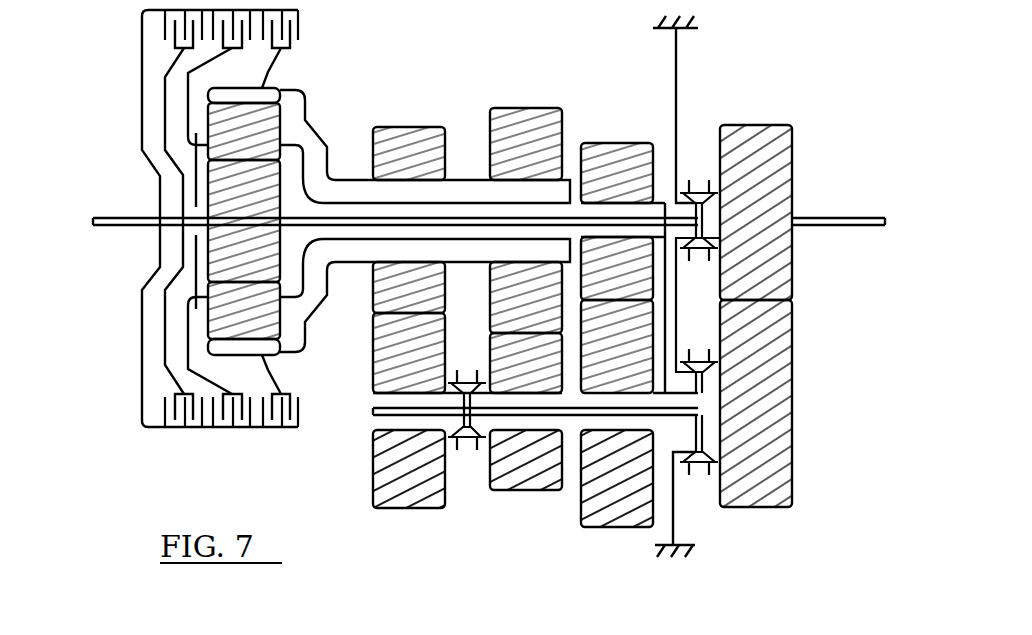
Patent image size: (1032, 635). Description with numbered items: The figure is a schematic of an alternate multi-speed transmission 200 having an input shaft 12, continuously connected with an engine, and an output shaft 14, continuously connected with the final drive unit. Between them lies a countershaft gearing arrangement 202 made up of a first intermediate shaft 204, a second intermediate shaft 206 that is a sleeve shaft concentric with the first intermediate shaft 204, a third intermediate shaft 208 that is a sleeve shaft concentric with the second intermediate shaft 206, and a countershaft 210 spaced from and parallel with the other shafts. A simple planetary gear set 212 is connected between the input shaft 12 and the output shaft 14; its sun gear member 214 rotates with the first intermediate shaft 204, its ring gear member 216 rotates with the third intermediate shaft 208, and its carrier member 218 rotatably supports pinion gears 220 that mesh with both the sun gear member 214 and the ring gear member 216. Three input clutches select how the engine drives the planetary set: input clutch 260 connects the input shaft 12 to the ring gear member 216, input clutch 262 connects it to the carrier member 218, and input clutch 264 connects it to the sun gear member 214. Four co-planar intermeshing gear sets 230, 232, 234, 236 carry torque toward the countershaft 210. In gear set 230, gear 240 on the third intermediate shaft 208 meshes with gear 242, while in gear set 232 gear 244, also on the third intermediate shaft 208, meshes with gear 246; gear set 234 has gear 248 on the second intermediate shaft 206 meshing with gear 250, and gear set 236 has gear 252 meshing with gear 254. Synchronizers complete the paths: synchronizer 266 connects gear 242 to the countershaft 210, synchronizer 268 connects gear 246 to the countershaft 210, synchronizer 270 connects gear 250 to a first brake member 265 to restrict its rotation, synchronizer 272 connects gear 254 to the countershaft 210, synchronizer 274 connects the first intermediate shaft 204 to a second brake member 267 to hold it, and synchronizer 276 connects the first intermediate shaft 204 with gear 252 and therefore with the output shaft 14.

The multi-speed transmission 200 is at (829, 57).
The input member 12 is at (111, 226).
The output member 14 is at (847, 226).
The countershaft gearing arrangement 202 is at (562, 510).
The first intermediate shaft 204 is at (361, 232).
The second intermediate shaft 206 is at (570, 200).
The third intermediate shaft 208 is at (476, 180).
The countershaft 210 is at (577, 414).
The planetary gear set 212 is at (425, 346).
The sun gear member 214 is at (264, 241).
The ring gear member 216 is at (265, 97).
The carrier member 218 is at (165, 153).
The pinion gears 220 is at (264, 144).
The gear set 230 is at (412, 514).
The gear set 232 is at (533, 499).
The gear set 234 is at (613, 538).
The gear set 236 is at (772, 356).
The gear 240 is at (427, 171).
The gear 242 is at (426, 374).
The gear 244 is at (542, 171).
The gear 246 is at (541, 374).
The gear 248 is at (634, 189).
The gear 250 is at (633, 361).
The gear 252 is at (772, 209).
The gear 254 is at (772, 399).
The input clutch 260 is at (299, 32).
The input clutch 262 is at (231, 49).
The input clutch 264 is at (167, 40).
The first brake member 265 is at (676, 527).
The synchronizer 266 is at (460, 456).
The second brake member 267 is at (676, 78).
The synchronizer 268 is at (473, 362).
The synchronizer 270 is at (691, 490).
The synchronizer 272 is at (706, 330).
The synchronizer 274 is at (697, 270).
The synchronizer 276 is at (707, 177).